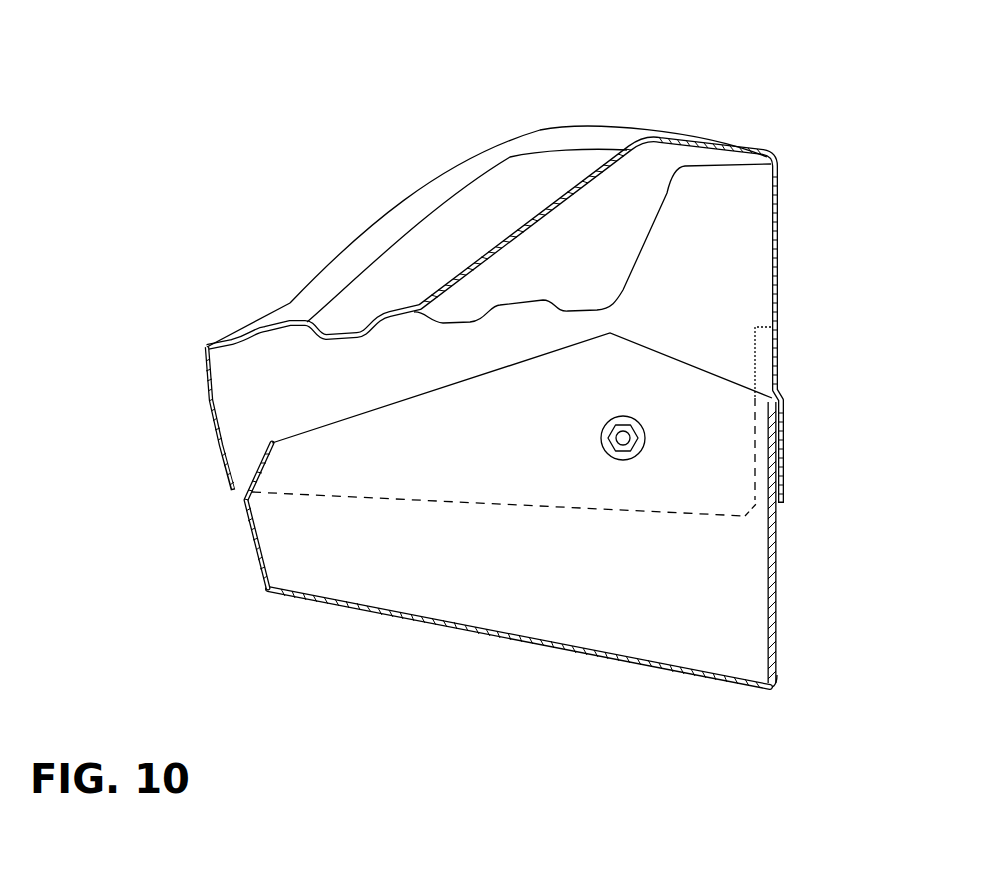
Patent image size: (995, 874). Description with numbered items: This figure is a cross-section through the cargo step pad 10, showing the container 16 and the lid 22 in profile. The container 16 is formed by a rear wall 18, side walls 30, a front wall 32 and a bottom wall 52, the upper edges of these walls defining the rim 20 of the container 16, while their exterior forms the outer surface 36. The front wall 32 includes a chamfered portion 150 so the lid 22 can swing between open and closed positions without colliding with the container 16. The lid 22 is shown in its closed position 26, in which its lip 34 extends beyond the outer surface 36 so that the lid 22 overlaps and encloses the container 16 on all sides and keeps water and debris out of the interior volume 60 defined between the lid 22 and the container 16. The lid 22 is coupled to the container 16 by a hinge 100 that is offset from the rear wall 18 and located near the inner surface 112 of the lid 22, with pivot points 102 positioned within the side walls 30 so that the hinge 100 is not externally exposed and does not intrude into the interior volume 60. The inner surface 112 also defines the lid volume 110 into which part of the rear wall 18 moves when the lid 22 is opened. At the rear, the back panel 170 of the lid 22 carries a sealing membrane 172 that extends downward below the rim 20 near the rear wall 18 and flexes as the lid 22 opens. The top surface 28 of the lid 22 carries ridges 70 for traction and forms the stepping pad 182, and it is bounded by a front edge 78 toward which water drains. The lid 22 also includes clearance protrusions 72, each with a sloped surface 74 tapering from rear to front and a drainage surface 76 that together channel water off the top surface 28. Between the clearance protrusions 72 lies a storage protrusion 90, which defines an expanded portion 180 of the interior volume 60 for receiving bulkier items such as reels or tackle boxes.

The cargo step pad 10 is at (187, 142).
The container 16 is at (343, 618).
The rear wall 18 is at (777, 648).
The rim 20 is at (272, 443).
The lid 22 is at (622, 97).
The closed position 26 is at (190, 317).
The top surface 28 is at (290, 322).
The side walls 30 is at (437, 570).
The front wall 32 is at (248, 527).
The lip 34 is at (233, 483).
The outer surface 36 is at (777, 562).
The bottom wall 52 is at (577, 652).
The interior volume 60 is at (450, 458).
The ridges 70 is at (390, 313).
The clearance protrusions 72 is at (517, 127).
The sloped surface 74 is at (427, 197).
The drainage surface 76 is at (480, 222).
The front edge 78 is at (203, 343).
The storage protrusion 90 is at (650, 133).
The hinge 100 is at (605, 443).
The pivot points 102 is at (648, 453).
The lid volume 110 is at (705, 277).
The inner surface 112 is at (717, 208).
The chamfered portion 150 is at (253, 482).
The back panel 170 is at (778, 285).
The sealing membrane 172 is at (785, 452).
The expanded portion 180 is at (557, 255).
The stepping pad 182 is at (260, 325).